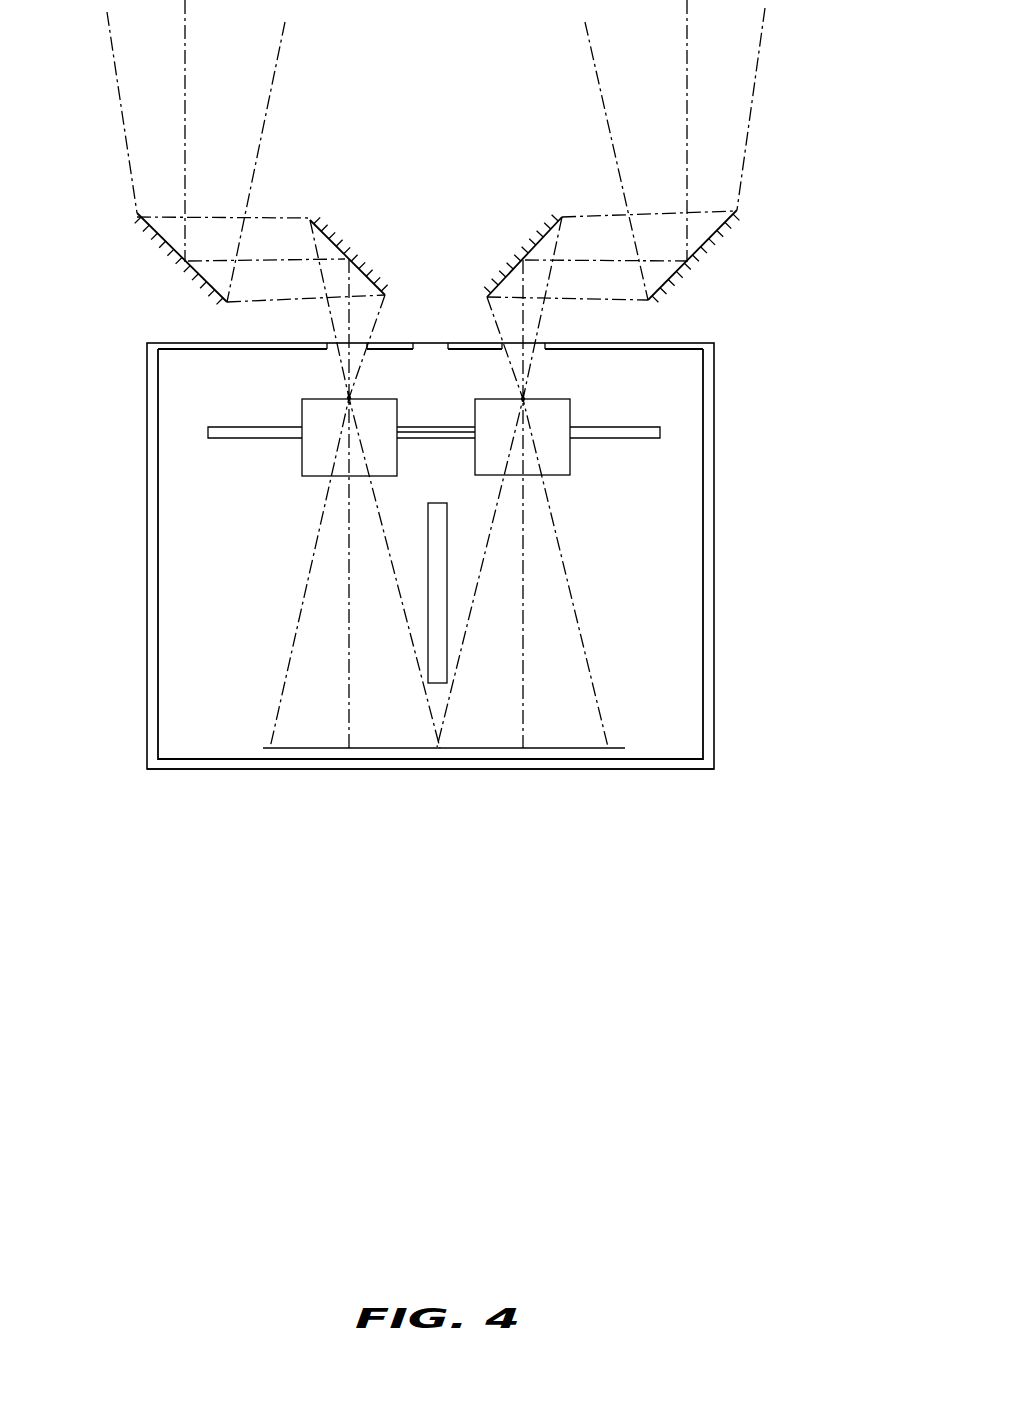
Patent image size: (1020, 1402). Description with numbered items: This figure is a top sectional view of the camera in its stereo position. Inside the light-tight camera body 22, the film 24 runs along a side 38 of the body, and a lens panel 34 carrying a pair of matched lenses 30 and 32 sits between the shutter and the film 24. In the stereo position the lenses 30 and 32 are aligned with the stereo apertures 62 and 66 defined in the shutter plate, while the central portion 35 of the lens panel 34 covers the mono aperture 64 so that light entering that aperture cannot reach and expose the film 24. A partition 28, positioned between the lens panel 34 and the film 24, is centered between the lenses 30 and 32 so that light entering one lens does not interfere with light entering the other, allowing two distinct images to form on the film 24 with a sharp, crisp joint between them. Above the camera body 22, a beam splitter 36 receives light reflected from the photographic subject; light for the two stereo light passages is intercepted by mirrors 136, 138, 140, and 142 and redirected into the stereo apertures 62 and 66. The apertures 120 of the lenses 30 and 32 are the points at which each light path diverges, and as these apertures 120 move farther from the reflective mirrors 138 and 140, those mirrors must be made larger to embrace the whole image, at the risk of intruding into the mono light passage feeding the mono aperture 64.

The camera body 22 is at (737, 393).
The film 24 is at (584, 748).
The partition 28 is at (433, 590).
The lens 30 is at (560, 448).
The lens 32 is at (314, 462).
The lens panel 34 is at (245, 429).
The central portion of lens panel 35 is at (430, 427).
The beam splitter 36 is at (733, 233).
The side of camera body 38 is at (274, 770).
The stereo aperture 62 is at (534, 335).
The mono aperture 64 is at (432, 346).
The stereo aperture 66 is at (367, 332).
The aperture of lens 120 is at (347, 398).
The mirror 136 is at (170, 243).
The mirror 138 is at (336, 242).
The mirror 140 is at (530, 243).
The mirror 142 is at (688, 264).